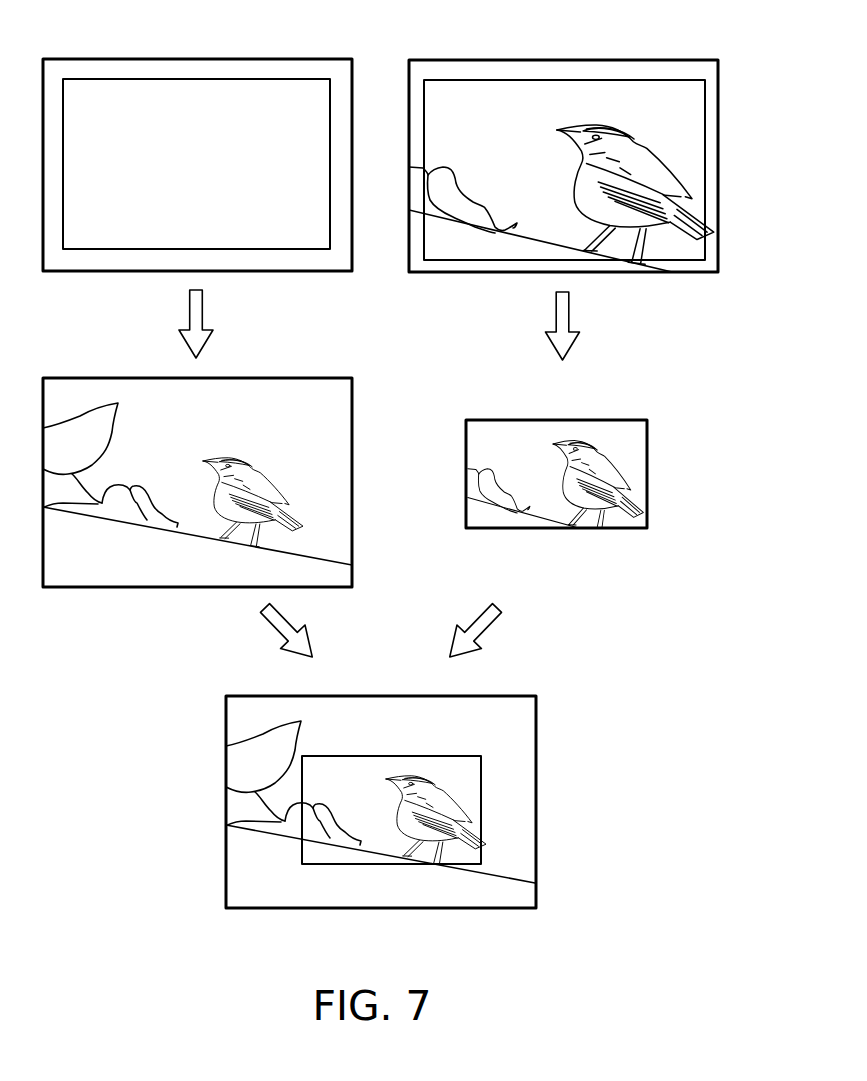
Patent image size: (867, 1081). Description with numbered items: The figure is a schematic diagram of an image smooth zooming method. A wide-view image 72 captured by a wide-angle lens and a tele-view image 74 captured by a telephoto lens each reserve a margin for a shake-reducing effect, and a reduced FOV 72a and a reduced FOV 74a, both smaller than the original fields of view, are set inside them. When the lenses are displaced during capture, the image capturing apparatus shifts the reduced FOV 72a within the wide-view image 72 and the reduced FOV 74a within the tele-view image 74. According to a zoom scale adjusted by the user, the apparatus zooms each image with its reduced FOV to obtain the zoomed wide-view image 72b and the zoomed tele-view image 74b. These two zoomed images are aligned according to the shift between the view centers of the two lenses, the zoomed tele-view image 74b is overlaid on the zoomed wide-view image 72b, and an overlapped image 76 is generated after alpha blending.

The wide-view image 72 is at (312, 58).
The reduced FOV 72a is at (200, 78).
The zoomed wide-view image 72b is at (312, 377).
The tele-view image 74 is at (677, 59).
The reduced FOV 74a is at (530, 79).
The zoomed tele-view image 74b is at (633, 420).
The overlapped image 76 is at (518, 695).